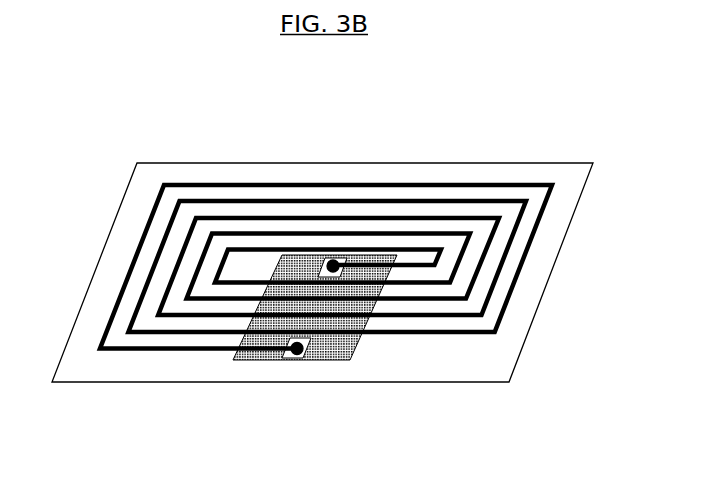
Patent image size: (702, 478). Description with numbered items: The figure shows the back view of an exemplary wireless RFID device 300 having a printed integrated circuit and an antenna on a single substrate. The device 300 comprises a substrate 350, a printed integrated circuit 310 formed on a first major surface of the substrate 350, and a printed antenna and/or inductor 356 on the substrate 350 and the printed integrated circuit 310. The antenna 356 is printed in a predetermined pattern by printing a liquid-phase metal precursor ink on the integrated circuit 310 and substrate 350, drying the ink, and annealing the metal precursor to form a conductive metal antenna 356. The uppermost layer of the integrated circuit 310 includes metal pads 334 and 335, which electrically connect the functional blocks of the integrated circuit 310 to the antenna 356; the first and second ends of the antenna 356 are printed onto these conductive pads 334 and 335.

The device 300 is at (157, 120).
The printed integrated circuit 310 is at (322, 361).
The pad 334 is at (286, 357).
The pad 335 is at (347, 258).
The substrate 350 is at (539, 301).
The antenna 356 is at (503, 179).